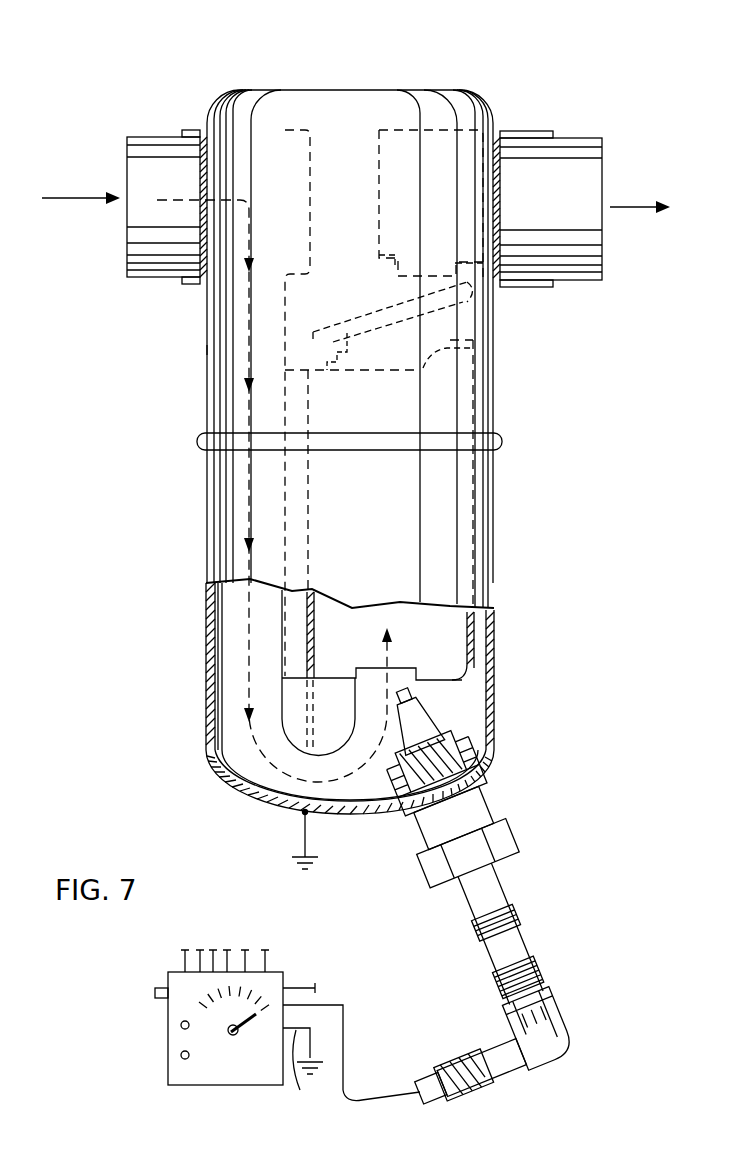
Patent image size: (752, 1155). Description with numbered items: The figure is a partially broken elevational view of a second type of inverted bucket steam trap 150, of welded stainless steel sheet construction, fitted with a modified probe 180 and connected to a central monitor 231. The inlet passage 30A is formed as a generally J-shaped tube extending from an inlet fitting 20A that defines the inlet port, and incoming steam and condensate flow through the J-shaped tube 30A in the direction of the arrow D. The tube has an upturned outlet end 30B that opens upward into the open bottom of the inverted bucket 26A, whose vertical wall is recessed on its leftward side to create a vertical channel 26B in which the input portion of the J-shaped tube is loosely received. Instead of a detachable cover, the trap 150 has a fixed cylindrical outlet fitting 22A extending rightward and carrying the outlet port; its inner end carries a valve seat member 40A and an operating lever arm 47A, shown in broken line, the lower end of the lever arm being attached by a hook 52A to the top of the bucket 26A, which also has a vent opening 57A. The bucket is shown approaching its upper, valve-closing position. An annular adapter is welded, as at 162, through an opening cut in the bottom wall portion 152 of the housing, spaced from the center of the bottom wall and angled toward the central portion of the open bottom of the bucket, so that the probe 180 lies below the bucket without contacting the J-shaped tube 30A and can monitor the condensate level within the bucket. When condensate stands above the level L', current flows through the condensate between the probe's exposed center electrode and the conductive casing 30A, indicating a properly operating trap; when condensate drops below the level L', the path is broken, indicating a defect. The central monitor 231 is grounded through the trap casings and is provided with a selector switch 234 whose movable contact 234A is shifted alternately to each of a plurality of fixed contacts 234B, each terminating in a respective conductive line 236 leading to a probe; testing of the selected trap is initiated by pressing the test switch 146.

The inverted bucket steam trap 150 is at (390, 58).
The inlet fitting 20A is at (150, 150).
The outlet fitting 22A is at (527, 152).
The valve seat member 40A is at (379, 278).
The operating lever arm 47A is at (497, 316).
The hook 52A is at (357, 355).
The vent opening 57A is at (480, 347).
The arrow D is at (219, 350).
The vertical channel 26B is at (302, 602).
The inverted bucket 26A is at (490, 614).
The inlet passage 30A is at (228, 630).
The upturned outlet end 30B is at (370, 668).
The level L' is at (484, 683).
The probe 180 is at (528, 832).
The weld 162 is at (400, 813).
The bottom wall portion 152 is at (243, 787).
The conductive line 236 is at (343, 1005).
The test switch 146 is at (155, 993).
The fixed contacts 234B is at (207, 1010).
The central monitor 231 is at (158, 1064).
The selector switch 234 is at (230, 1052).
The movable contact 234A is at (241, 1040).